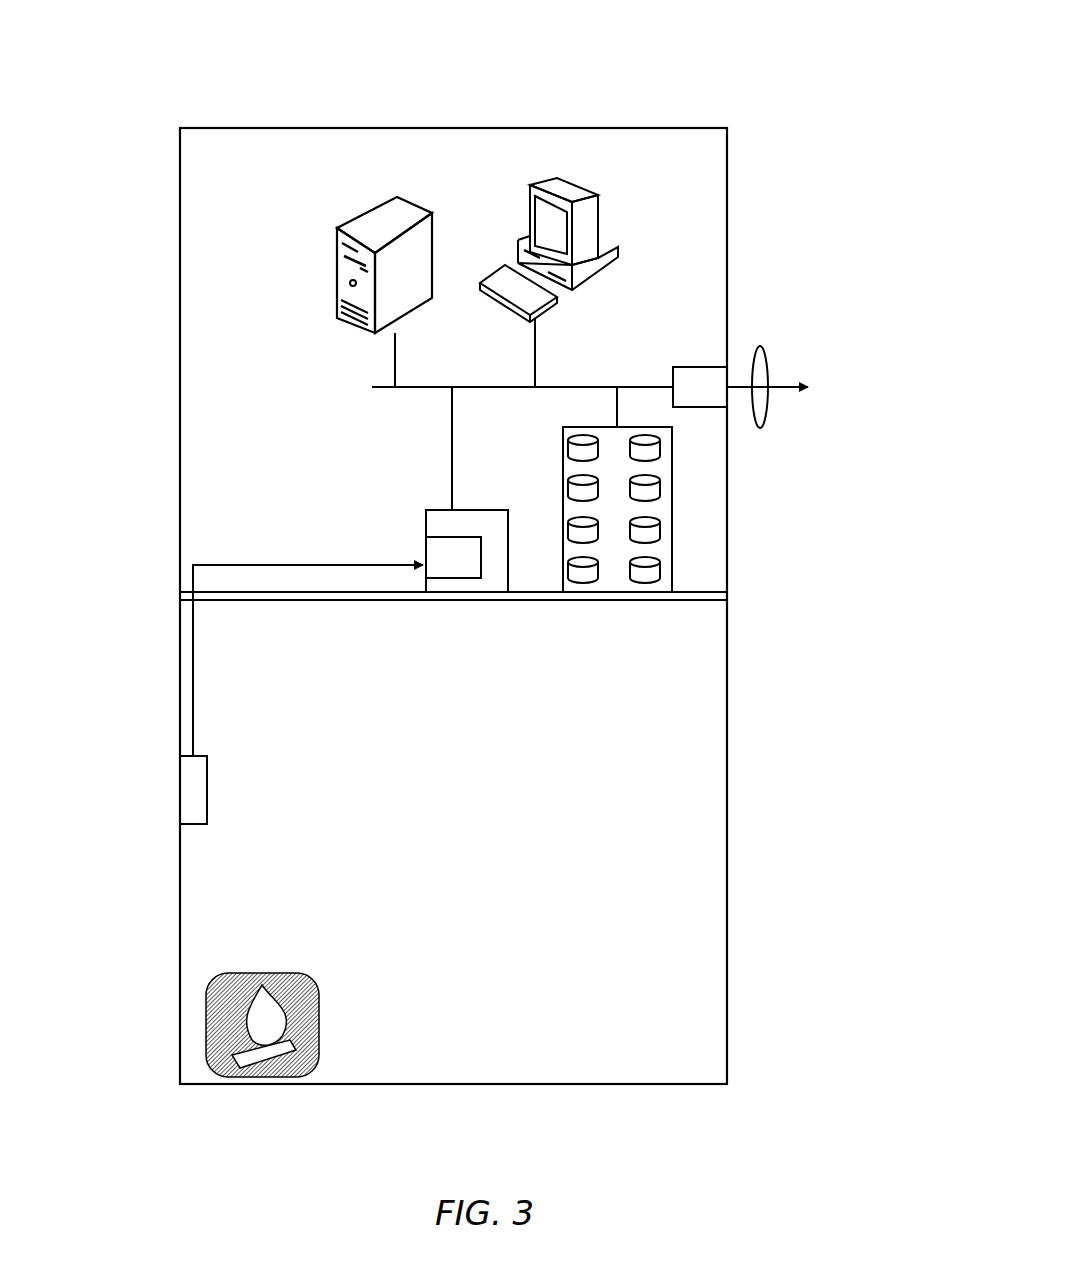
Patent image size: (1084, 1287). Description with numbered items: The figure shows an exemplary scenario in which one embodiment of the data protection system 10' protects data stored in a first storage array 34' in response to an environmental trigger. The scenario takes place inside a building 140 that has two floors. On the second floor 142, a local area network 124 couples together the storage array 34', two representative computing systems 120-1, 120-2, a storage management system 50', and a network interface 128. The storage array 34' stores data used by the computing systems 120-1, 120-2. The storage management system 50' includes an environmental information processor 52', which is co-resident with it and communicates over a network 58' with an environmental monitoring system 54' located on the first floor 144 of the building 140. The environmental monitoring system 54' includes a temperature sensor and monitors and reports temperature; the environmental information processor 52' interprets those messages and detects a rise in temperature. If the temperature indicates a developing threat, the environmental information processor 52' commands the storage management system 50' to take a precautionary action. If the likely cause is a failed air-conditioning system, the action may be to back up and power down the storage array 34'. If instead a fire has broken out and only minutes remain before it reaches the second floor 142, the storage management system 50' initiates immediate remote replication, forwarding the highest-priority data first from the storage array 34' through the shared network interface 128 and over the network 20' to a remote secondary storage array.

The data protection system 10' is at (482, 46).
The building 140 is at (727, 128).
The computing system 120-1 is at (432, 213).
The computing system 120-2 is at (598, 195).
The local area network 124 is at (597, 387).
The network interface 128 is at (700, 387).
The network 20' is at (836, 448).
The first storage array 34' is at (581, 497).
The storage management system 50' is at (481, 524).
The environmental information processor 52' is at (453, 557).
The network 58' is at (308, 634).
The second floor 142 is at (208, 483).
The environmental monitoring system 54' is at (227, 777).
The first floor 144 is at (630, 933).